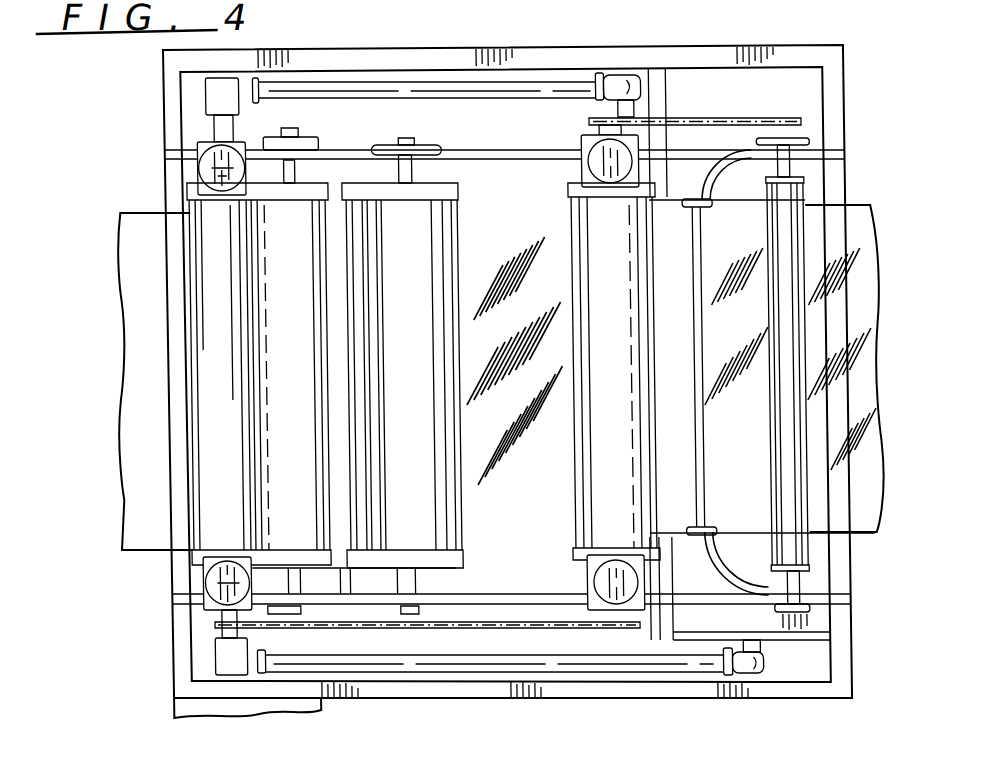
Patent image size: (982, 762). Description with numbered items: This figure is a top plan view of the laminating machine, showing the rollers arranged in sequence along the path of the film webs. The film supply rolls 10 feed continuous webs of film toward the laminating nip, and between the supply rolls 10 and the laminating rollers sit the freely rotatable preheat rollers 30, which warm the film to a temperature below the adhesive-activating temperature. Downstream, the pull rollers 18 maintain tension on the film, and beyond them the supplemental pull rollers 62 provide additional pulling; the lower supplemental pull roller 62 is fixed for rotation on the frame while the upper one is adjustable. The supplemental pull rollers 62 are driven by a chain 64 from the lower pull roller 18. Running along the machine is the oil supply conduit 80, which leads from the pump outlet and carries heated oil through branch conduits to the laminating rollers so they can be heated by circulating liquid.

The film supply rolls 10 is at (413, 318).
The pull rollers 18 is at (622, 318).
The preheat rollers 30 is at (305, 318).
The supplemental pull rollers 62 is at (800, 316).
The chain 64 is at (712, 120).
The oil supply conduit 80 is at (165, 112).